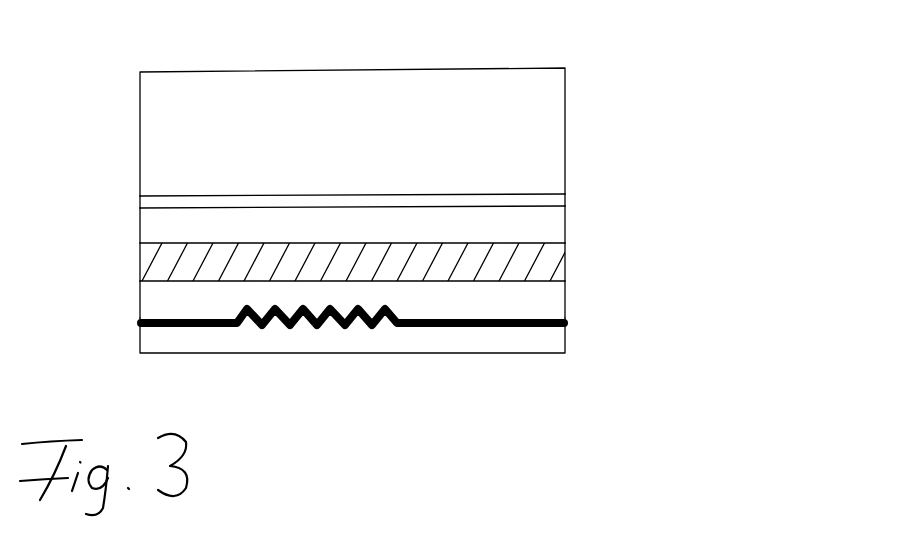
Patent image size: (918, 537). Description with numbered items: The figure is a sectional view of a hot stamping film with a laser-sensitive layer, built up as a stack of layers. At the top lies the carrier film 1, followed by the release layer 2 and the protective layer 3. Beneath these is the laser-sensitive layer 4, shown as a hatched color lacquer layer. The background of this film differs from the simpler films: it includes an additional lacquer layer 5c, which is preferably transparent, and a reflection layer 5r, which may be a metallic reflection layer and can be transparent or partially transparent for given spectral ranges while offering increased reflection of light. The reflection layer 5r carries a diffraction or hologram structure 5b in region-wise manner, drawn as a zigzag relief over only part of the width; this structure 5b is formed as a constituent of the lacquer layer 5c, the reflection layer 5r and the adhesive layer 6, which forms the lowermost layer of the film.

The carrier film 1 is at (514, 147).
The release layer 2 is at (514, 200).
The protective layer 3 is at (515, 226).
The laser-sensitive layer 4 is at (517, 262).
The lacquer layer 5c is at (515, 292).
The reflection layer 5r is at (565, 322).
The diffraction or hologram structure 5b is at (313, 328).
The adhesive layer 6 is at (515, 338).